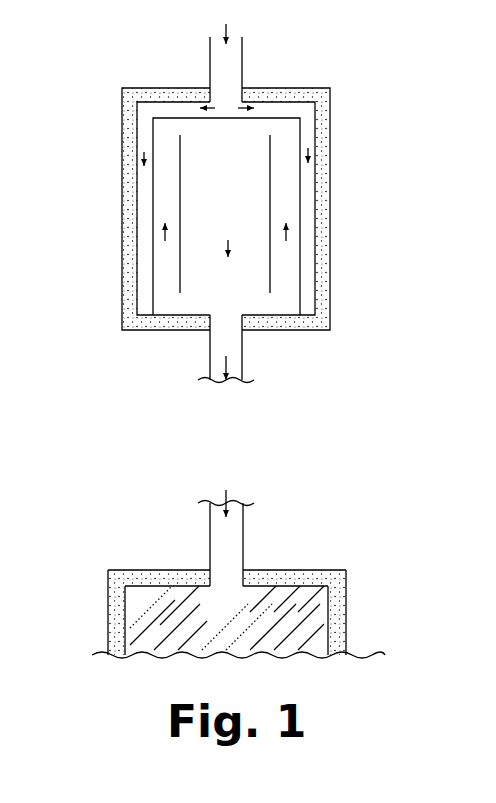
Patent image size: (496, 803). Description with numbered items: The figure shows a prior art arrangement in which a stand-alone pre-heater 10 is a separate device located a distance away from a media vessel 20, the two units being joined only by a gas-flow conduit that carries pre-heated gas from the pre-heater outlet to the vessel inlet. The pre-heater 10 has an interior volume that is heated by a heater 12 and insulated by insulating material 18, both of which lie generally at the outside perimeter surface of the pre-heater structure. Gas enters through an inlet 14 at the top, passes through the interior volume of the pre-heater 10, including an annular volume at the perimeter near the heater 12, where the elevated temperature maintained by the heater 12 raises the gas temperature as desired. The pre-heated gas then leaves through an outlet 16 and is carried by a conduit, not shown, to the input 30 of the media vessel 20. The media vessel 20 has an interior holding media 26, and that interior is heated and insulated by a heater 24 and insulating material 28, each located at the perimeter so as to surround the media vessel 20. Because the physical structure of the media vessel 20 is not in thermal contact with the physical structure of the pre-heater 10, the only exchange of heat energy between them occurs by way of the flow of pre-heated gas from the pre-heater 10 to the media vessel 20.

The pre-heater 10 is at (260, 203).
The heater 12 is at (312, 198).
The inlet 14 is at (242, 52).
The outlet 16 is at (242, 360).
The insulating material 18 is at (330, 283).
The media vessel 20 is at (253, 574).
The heater 24 is at (346, 592).
The media 26 is at (239, 629).
The insulating material 28 is at (338, 630).
The input 30 is at (243, 545).